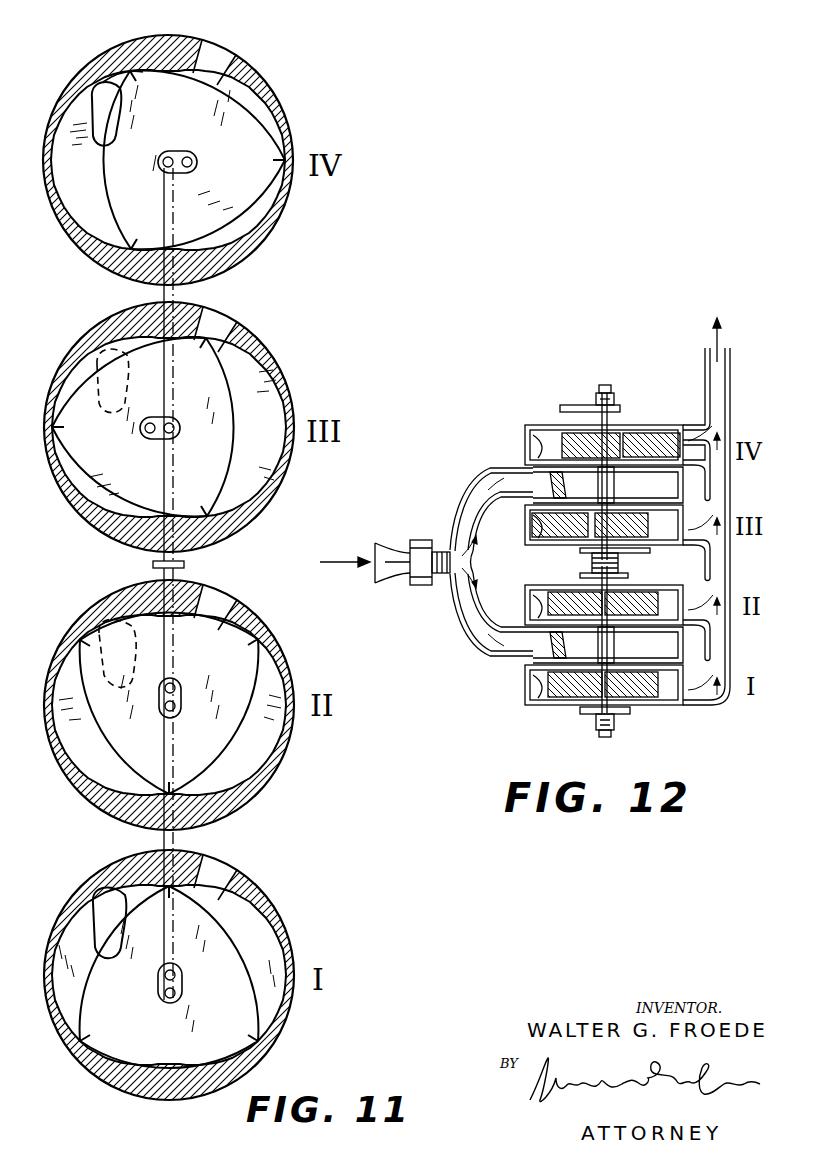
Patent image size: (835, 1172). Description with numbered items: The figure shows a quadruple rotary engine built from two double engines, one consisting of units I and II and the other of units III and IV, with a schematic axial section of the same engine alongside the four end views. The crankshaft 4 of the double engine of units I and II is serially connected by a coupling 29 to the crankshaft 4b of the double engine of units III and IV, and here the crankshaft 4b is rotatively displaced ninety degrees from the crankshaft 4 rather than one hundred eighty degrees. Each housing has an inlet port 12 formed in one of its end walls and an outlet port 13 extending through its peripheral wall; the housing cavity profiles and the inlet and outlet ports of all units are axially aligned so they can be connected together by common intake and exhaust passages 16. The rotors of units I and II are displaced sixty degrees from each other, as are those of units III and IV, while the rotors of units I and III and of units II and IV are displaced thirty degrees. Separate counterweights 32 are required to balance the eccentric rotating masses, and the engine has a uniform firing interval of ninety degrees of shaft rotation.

In FIG. 11, the crankshaft 4 is at (178, 838).
In FIG. 12, the crankshaft 4 is at (614, 640).
In FIG. 11, the crankshaft 4b is at (178, 293).
In FIG. 12, the crankshaft 4b is at (614, 482).
In FIG. 11, the inlet port 12 is at (104, 92).
In FIG. 12, the inlet port 12 is at (527, 437).
In FIG. 11, the outlet port 13 is at (224, 56).
In FIG. 12, the outlet port 13 is at (699, 426).
In FIG. 12, the intake manifold pipe 16 is at (505, 478).
In FIG. 11, the coupling 29 is at (188, 566).
In FIG. 12, the coupling 29 is at (618, 563).
In FIG. 12, the counterweights 32 is at (590, 408).